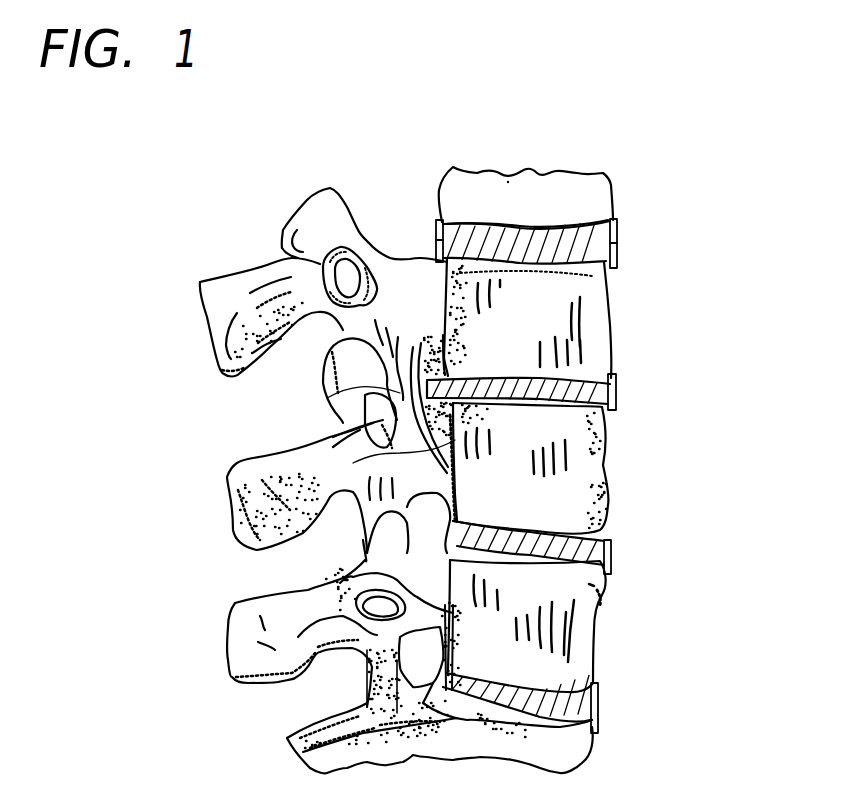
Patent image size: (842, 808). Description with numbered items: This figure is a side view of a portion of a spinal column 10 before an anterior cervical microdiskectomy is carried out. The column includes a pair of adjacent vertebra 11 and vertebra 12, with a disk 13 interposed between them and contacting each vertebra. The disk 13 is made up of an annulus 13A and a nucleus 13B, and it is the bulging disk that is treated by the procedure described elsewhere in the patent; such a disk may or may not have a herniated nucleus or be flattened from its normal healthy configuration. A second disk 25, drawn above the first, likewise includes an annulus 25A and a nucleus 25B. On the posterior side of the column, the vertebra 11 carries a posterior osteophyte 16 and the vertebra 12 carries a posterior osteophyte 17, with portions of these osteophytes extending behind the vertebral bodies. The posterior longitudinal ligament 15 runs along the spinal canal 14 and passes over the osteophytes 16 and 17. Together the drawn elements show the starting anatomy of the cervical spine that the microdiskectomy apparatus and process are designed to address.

The spinal column 10 is at (474, 150).
The vertebra 11 is at (613, 297).
The vertebra 12 is at (617, 515).
The disk 13 is at (616, 364).
The annulus 13A is at (619, 383).
The nucleus 13B is at (575, 398).
The spinal canal 14 is at (327, 398).
The posterior longitudinal ligament 15 is at (365, 458).
The posterior osteophyte 16 is at (413, 347).
The posterior osteophyte 17 is at (453, 423).
The disk 25 is at (618, 214).
The annulus 25A is at (437, 243).
The nucleus 25B is at (583, 230).